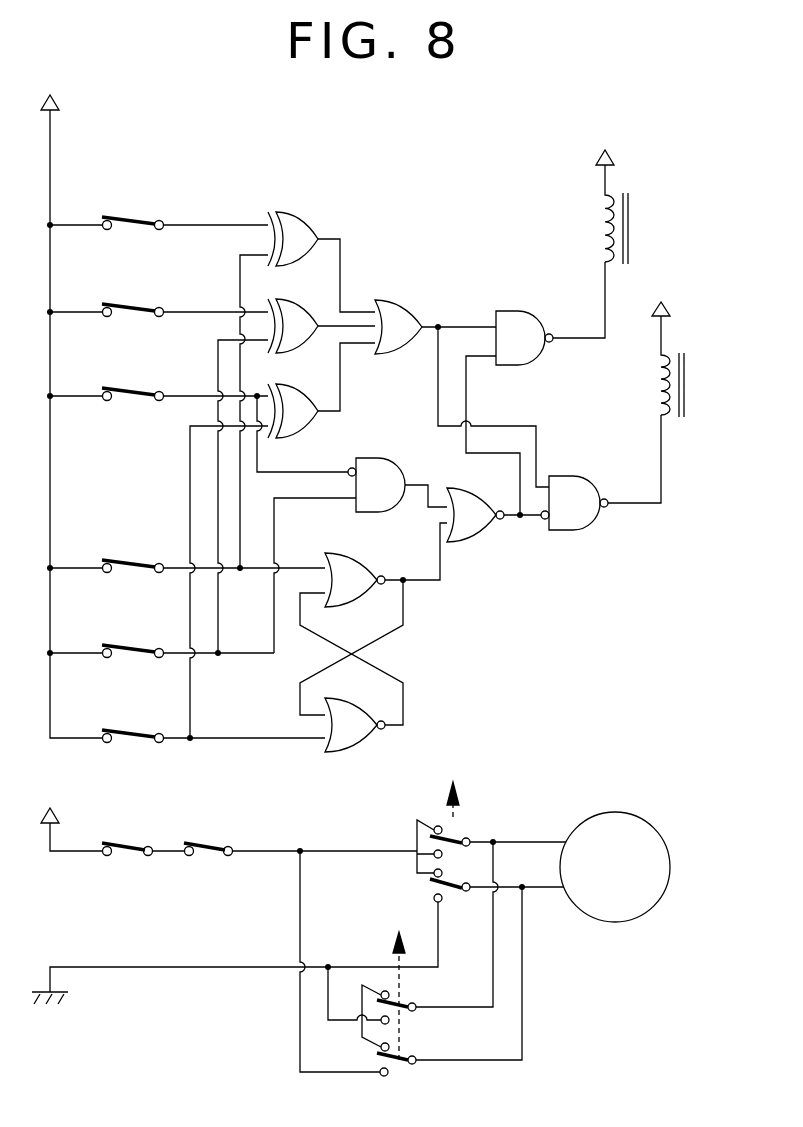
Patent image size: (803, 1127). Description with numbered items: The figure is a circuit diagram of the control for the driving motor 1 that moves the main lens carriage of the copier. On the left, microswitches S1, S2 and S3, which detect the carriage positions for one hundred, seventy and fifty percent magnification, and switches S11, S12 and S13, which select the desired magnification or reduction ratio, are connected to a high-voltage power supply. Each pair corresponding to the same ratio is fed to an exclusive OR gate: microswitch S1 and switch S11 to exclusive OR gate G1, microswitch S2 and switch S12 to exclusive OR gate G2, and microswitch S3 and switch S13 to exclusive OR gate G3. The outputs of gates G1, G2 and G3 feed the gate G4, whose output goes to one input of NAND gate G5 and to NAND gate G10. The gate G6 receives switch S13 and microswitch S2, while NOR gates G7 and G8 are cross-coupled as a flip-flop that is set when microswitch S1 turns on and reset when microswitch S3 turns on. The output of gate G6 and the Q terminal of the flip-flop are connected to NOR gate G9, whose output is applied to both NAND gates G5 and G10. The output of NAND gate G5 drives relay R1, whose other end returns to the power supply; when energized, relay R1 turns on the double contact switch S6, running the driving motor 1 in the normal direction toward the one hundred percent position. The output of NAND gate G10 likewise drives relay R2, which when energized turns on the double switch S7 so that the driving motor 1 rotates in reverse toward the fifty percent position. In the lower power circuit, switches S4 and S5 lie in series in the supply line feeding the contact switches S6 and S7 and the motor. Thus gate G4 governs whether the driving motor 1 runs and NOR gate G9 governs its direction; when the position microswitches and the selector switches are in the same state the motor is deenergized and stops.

The switch S11 is at (122, 216).
The switch S12 is at (124, 303).
The switch S13 is at (124, 388).
The microswitch S1 is at (122, 562).
The microswitch S2 is at (122, 647).
The microswitch S3 is at (122, 728).
The exclusive OR gate G1 is at (302, 213).
The exclusive OR gate G2 is at (298, 301).
The exclusive OR gate G3 is at (298, 386).
The OR gate G4 is at (405, 301).
The NAND gate G5 is at (525, 310).
The AND gate G6 is at (384, 458).
The NOR gate G7 is at (351, 555).
The NOR gate G8 is at (355, 752).
The NOR gate G9 is at (467, 542).
The NAND gate G10 is at (574, 530).
The relay R1 is at (632, 229).
The relay R2 is at (688, 387).
The switch S4 is at (118, 858).
The switch S5 is at (204, 858).
The double contact switch S6 is at (448, 894).
The double switch S7 is at (393, 1064).
The driving motor 1 is at (651, 822).